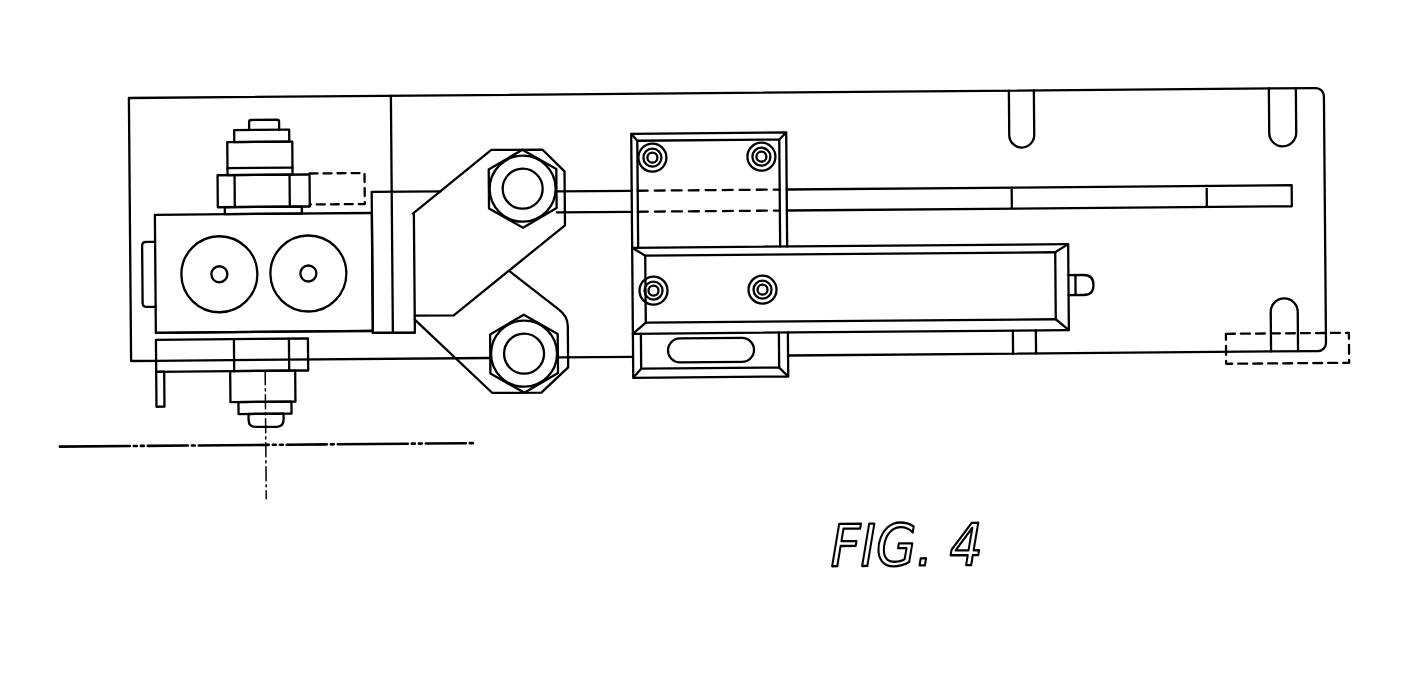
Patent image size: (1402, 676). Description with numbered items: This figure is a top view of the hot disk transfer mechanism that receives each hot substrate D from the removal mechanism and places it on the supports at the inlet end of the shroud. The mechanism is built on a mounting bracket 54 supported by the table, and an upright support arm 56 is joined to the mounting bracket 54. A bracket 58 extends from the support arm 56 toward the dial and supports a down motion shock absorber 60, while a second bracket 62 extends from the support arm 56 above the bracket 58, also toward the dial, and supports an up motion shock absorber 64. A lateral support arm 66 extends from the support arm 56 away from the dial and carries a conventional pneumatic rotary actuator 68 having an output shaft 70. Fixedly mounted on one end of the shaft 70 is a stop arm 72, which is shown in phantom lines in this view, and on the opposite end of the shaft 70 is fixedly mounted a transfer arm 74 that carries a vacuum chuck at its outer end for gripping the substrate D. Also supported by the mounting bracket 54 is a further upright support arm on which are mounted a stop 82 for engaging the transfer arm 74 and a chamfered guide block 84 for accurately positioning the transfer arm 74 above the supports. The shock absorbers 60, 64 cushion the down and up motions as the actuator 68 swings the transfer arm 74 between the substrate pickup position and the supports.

The mounting bracket 54 is at (1300, 247).
The upright support arm 56 is at (384, 308).
The bracket 58 is at (558, 318).
The down motion shock absorber 60 is at (523, 357).
The bracket 62 is at (470, 182).
The up motion shock absorber 64 is at (523, 186).
The lateral support arm 66 is at (343, 343).
The pneumatic rotary actuator 68 is at (244, 247).
The output shaft 70 is at (262, 122).
The stop arm 72 is at (338, 175).
The transfer arm 74 is at (158, 357).
The stop 82 is at (765, 360).
The chamfered guide block 84 is at (910, 297).
The substrate D is at (131, 452).